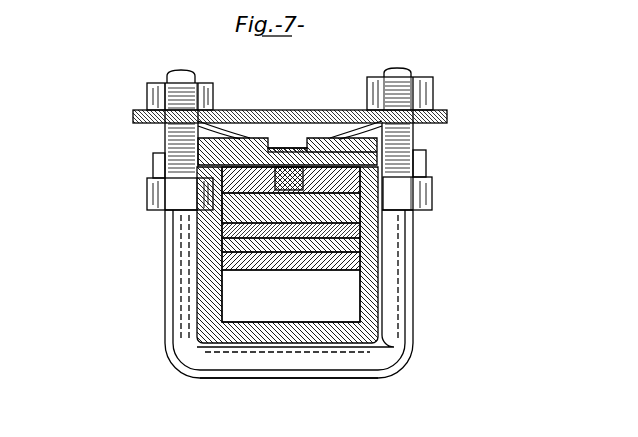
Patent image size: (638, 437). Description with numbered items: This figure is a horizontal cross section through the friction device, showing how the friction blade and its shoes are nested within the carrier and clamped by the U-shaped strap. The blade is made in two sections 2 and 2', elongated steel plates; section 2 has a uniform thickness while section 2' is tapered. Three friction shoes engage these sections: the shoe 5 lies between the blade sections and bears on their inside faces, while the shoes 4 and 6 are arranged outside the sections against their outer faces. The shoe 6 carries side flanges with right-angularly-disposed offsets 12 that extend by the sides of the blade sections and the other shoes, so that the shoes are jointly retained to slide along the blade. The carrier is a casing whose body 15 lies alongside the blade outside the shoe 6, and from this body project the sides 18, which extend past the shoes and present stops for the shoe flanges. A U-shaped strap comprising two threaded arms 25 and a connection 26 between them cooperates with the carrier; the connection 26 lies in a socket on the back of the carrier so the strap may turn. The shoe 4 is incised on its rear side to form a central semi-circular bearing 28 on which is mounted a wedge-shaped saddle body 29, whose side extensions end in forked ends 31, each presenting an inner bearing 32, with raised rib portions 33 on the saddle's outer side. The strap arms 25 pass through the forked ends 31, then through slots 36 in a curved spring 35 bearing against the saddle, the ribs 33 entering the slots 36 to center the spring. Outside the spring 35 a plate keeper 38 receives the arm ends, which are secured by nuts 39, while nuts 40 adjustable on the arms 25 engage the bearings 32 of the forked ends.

The blade section 2 is at (345, 250).
The blade section 2' is at (353, 199).
The friction shoe 4 is at (250, 187).
The friction shoe 5 is at (383, 221).
The friction shoe 6 is at (273, 265).
The offset 12 is at (222, 243).
The body 15 is at (243, 337).
The sides 18 is at (222, 303).
The threaded arms or bolts 25 is at (167, 277).
The connection 26 is at (326, 378).
The semi-circular bearing 28 is at (288, 148).
The saddle body 29 is at (327, 157).
The forked ends 31 is at (153, 158).
The bearing 32 is at (147, 182).
The raised rib portions 33 is at (322, 138).
The curved spring 35 is at (133, 121).
The slots 36 is at (218, 138).
The keeper 38 is at (147, 101).
The nuts 39 is at (167, 82).
The nuts 40 is at (150, 202).